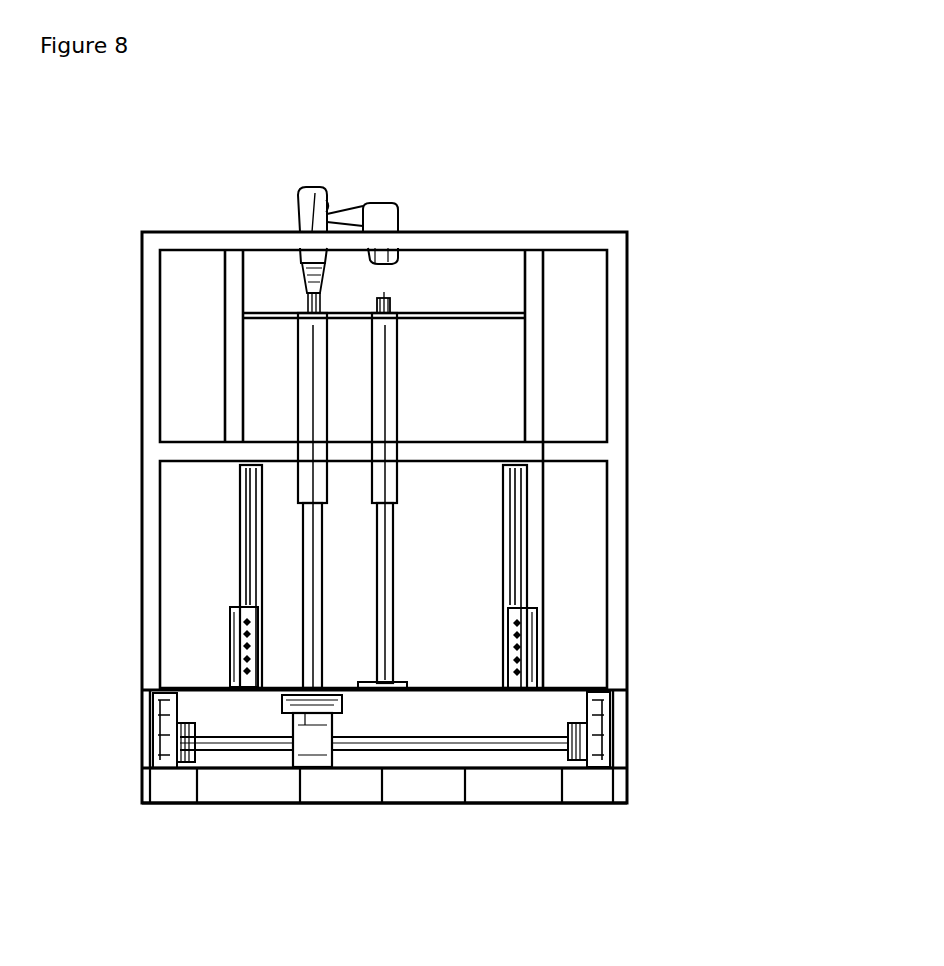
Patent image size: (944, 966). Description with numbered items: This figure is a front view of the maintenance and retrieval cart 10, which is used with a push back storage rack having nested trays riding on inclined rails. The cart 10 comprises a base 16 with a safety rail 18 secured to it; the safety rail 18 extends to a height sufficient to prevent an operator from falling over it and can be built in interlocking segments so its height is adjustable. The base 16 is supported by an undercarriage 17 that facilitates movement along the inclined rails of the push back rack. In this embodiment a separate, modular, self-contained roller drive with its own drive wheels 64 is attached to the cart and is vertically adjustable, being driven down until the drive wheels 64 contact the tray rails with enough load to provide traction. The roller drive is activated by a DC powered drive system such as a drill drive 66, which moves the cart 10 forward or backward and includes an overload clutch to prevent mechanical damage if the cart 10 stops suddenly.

The maintenance and retrieval cart 10 is at (97, 501).
The safety rail 18 is at (617, 325).
The base 16 is at (568, 687).
The undercarriage 17 is at (590, 789).
The drive wheels 64 is at (315, 745).
The drill drive 66 is at (325, 190).